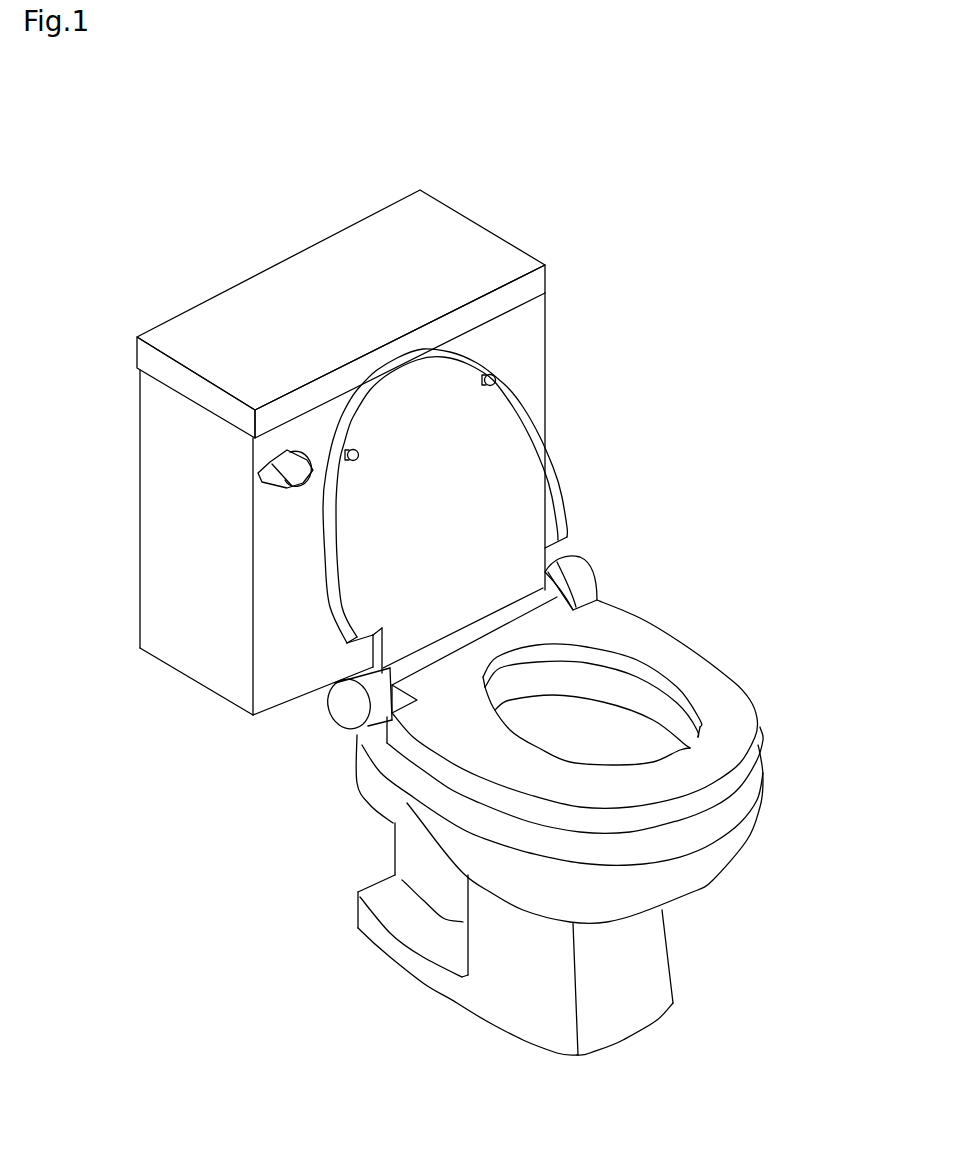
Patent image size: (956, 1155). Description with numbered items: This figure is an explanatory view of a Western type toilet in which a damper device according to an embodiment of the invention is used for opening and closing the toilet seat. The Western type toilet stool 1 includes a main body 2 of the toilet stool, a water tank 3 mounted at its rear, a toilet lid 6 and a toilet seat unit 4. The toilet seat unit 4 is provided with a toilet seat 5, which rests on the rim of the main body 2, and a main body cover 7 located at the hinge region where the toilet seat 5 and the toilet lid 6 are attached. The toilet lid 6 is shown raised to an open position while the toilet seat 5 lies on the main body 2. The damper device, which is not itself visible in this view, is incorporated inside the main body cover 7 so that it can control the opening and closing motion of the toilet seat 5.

The Western type toilet stool 1 is at (623, 192).
The main body of a toilet stool 2 is at (707, 863).
The water tank 3 is at (403, 243).
The toilet seat unit 4 is at (590, 557).
The toilet seat 5 is at (653, 655).
The toilet lid 6 is at (452, 430).
The main body cover 7 is at (580, 587).